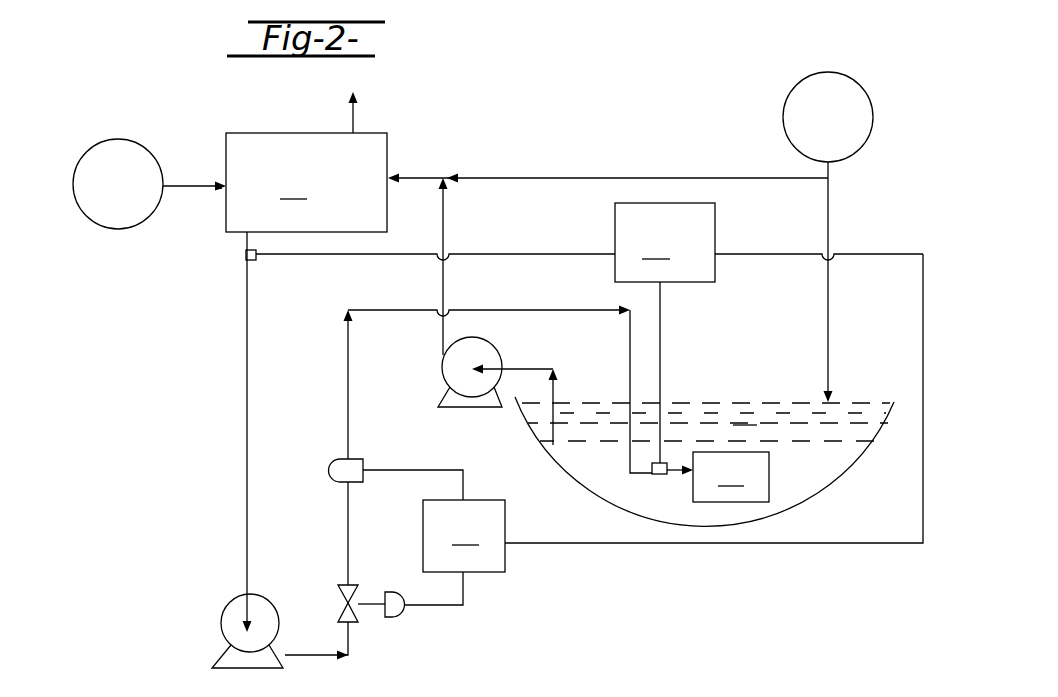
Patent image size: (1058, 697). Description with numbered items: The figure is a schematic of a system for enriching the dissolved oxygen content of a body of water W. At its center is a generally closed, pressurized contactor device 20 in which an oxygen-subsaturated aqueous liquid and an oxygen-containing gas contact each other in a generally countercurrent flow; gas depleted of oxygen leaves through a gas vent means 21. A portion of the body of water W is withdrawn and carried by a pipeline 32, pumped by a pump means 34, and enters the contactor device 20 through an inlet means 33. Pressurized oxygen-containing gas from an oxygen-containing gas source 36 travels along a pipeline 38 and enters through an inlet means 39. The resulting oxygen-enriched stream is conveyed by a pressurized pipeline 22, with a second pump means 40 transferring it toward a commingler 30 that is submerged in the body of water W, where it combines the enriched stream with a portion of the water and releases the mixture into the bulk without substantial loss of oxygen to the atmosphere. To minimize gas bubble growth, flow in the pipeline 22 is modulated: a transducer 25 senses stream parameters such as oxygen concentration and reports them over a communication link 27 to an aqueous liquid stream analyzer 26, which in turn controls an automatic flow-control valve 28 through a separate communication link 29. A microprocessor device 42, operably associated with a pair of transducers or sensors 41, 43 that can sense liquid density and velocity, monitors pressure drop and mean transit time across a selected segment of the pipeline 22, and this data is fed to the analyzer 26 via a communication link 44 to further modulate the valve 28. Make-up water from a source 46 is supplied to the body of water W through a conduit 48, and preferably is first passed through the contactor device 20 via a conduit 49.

The contactor device 20 is at (306, 182).
The gas vent means 21 is at (353, 121).
The pressurized pipeline 22 is at (247, 345).
The transducer 25 is at (338, 462).
The aqueous liquid stream analyzer 26 is at (464, 536).
The communication link 27 is at (394, 470).
The automatic flow-control valve 28 is at (358, 620).
The communication link 29 is at (433, 607).
The commingler 30 is at (731, 477).
The pipeline 32 is at (445, 214).
The inlet means 33 is at (392, 176).
The pump means 34 is at (490, 345).
The oxygen-containing gas source 36 is at (128, 140).
The pipeline 38 is at (196, 184).
The inlet means 39 is at (226, 190).
The second pump means 40 is at (222, 625).
The transducer or sensor 41 is at (256, 260).
The microprocessor device 42 is at (665, 242).
The transducer or sensor 43 is at (657, 475).
The communication link 44 is at (828, 545).
The source 46 is at (866, 92).
The conduit 48 is at (828, 337).
The conduit 49 is at (595, 178).
The body of water W is at (745, 413).